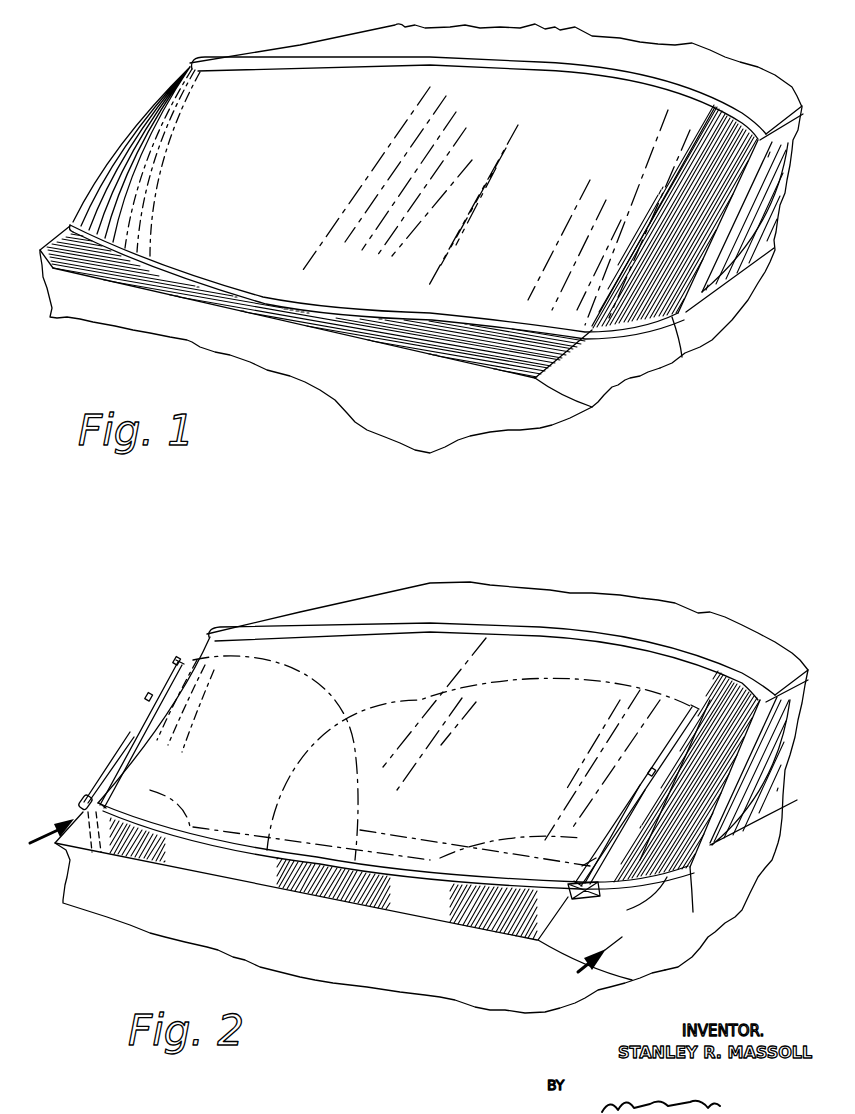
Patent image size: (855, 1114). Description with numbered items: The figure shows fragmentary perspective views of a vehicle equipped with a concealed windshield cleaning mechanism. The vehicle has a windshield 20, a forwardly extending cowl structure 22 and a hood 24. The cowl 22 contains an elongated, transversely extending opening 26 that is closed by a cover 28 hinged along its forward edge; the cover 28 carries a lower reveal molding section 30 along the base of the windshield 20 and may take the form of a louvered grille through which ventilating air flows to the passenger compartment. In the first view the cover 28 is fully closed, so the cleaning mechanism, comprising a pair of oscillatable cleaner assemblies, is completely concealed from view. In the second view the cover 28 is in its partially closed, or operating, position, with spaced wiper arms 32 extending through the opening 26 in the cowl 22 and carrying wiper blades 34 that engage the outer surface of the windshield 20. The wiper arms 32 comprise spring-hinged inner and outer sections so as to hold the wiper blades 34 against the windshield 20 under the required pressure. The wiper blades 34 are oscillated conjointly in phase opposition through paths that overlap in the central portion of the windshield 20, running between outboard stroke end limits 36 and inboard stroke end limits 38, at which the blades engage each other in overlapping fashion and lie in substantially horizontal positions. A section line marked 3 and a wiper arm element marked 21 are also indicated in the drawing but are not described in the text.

In FIG. 1, the windshield 20 is at (384, 69).
In FIG. 2, the windshield 20 is at (455, 638).
In FIG. 2, the wiper arm connector 21 is at (591, 890).
In FIG. 1, the cowl structure 22 is at (634, 367).
In FIG. 2, the cowl structure 22 is at (672, 953).
In FIG. 1, the hood 24 is at (97, 318).
In FIG. 2, the hood 24 is at (105, 908).
In FIG. 2, the opening 26 is at (571, 907).
In FIG. 1, the cover 28 is at (444, 349).
In FIG. 2, the cover 28 is at (256, 870).
In FIG. 1, the lower reveal molding section 30 is at (320, 303).
In FIG. 2, the lower reveal molding section 30 is at (433, 872).
In FIG. 2, the wiper arms 32 is at (130, 760).
In FIG. 2, the wiper blades 34 is at (175, 663).
In FIG. 2, the outboard stroke end limits 36 is at (710, 737).
In FIG. 2, the inboard stroke end limits 38 is at (224, 826).
In FIG. 2, the section line 3- 3 is at (331, 881).